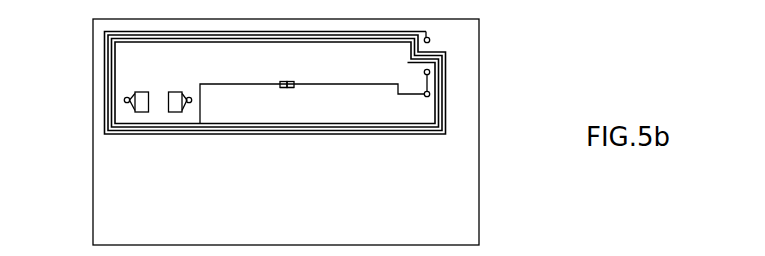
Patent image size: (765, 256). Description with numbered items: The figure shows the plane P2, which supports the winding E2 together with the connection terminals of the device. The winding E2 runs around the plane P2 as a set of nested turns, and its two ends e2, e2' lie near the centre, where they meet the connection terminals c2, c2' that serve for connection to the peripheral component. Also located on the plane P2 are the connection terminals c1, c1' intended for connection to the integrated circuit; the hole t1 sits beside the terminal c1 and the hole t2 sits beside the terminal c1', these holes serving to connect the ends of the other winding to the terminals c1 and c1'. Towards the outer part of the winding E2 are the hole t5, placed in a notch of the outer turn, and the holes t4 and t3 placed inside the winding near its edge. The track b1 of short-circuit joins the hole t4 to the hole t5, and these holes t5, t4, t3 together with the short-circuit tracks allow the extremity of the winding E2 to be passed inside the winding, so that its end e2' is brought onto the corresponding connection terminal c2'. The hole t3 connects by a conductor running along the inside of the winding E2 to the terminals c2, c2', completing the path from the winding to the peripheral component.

The plane P2 is at (479, 38).
The winding E2 is at (448, 123).
The hole t5 is at (430, 38).
The hole t4 is at (424, 71).
The hole t3 is at (425, 96).
The track of short-circuit b1 is at (428, 82).
The hole t1 is at (127, 97).
The hole t2 is at (190, 97).
The connection terminal c1 is at (145, 80).
The connection terminal c1' is at (180, 80).
The connection terminal c2 is at (273, 68).
The connection terminal c2' is at (300, 68).
The end of winding E2 e2 is at (272, 102).
The end of winding E2 e2' is at (305, 102).